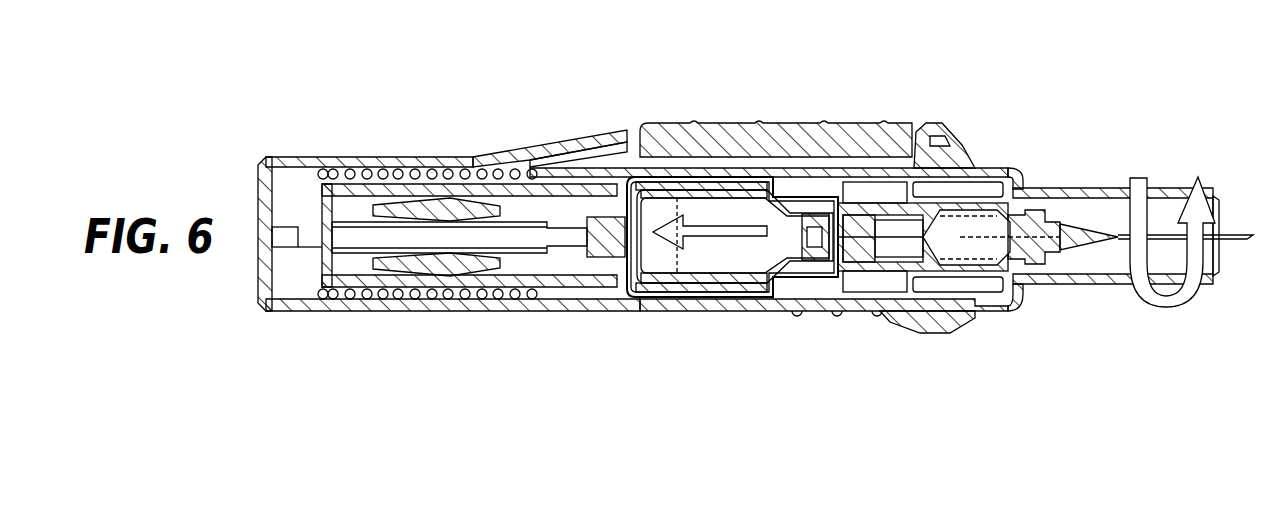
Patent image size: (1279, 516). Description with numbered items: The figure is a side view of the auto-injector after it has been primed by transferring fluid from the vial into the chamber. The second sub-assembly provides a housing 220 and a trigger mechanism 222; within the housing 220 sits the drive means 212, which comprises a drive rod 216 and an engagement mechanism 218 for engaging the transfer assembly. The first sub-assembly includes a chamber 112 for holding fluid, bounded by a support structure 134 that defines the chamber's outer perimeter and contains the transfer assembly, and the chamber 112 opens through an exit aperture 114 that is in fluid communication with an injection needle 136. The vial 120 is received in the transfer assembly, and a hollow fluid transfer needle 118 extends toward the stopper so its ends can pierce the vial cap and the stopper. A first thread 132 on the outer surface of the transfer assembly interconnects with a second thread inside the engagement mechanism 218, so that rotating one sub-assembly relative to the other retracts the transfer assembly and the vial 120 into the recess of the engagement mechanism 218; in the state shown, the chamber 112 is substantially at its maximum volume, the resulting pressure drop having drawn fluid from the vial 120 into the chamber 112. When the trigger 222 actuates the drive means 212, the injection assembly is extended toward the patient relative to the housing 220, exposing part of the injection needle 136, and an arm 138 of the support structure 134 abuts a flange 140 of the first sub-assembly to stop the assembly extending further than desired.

The drive means 212 is at (400, 131).
The housing 220 is at (360, 311).
The support structure 134 is at (788, 298).
The trigger mechanism 222 is at (795, 123).
The arm 138 is at (988, 168).
The flange 140 is at (1027, 170).
The engagement mechanism 218 is at (660, 297).
The drive rod 216 is at (603, 250).
The vial 120 is at (636, 190).
The first thread 132 is at (694, 190).
The chamber 112 is at (982, 255).
The fluid transfer needle 118 is at (857, 240).
The exit aperture 114 is at (1015, 238).
The injection needle 136 is at (1238, 243).